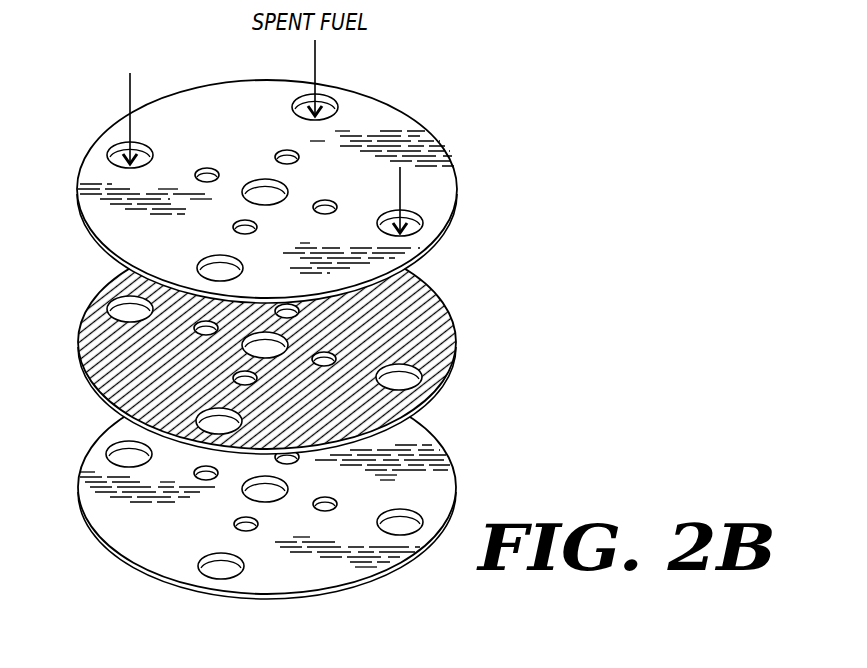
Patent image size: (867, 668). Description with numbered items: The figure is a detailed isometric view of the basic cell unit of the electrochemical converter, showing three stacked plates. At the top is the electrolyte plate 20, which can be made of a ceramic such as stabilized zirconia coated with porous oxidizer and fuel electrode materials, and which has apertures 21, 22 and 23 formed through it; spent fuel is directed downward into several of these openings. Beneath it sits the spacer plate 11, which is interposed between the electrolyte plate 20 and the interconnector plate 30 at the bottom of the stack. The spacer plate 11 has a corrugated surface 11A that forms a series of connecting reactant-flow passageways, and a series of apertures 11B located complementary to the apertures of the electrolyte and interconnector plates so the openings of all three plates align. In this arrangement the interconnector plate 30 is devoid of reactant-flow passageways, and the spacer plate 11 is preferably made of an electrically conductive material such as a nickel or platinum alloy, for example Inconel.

The electrolyte plate 20 is at (290, 171).
The aperture 21 is at (273, 185).
The aperture 22 is at (210, 167).
The aperture 23 is at (418, 225).
The spacer plate 11 is at (270, 344).
The corrugated surface 11A is at (128, 285).
The apertures 11B is at (124, 311).
The interconnector plate 30 is at (452, 475).